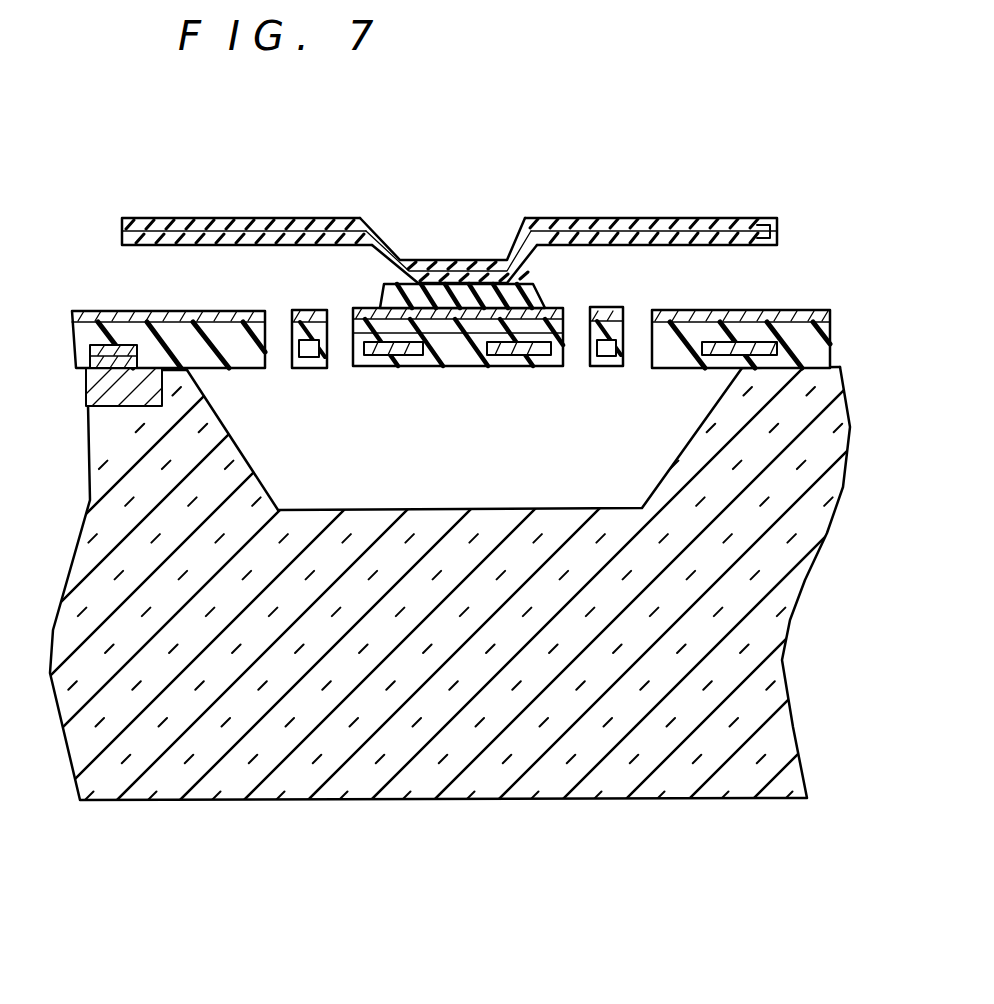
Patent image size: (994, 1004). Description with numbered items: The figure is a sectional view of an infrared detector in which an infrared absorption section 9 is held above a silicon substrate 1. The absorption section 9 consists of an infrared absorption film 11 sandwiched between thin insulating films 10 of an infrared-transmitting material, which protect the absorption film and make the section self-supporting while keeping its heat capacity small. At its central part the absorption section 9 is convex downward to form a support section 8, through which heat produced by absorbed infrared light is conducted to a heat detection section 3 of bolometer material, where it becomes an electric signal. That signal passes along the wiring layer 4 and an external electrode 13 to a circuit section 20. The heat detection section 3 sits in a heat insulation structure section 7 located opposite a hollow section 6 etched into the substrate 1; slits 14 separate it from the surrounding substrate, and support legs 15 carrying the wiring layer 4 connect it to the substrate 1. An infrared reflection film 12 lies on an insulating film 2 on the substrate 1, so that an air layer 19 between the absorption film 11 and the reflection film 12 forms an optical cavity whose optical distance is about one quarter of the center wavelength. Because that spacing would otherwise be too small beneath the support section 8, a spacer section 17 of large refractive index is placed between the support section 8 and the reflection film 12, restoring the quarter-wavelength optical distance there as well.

The silicon substrate 1 is at (660, 777).
The insulating film 2 is at (813, 345).
The heat detection section 3 is at (450, 345).
The wiring layer 4 is at (740, 370).
The hollow section 6 is at (278, 512).
The heat insulation structure section 7 is at (407, 372).
The support section 8 is at (466, 228).
The infrared absorption section 9 is at (668, 218).
The insulating film 10 is at (601, 218).
The infrared absorption film 11 is at (155, 218).
The infrared reflection film 12 is at (106, 312).
The external electrode 13 is at (88, 360).
The slits 14 is at (280, 372).
The support legs 15 is at (290, 330).
The spacer section 17 is at (383, 290).
The air layer 19 is at (160, 273).
The circuit section 20 is at (100, 408).